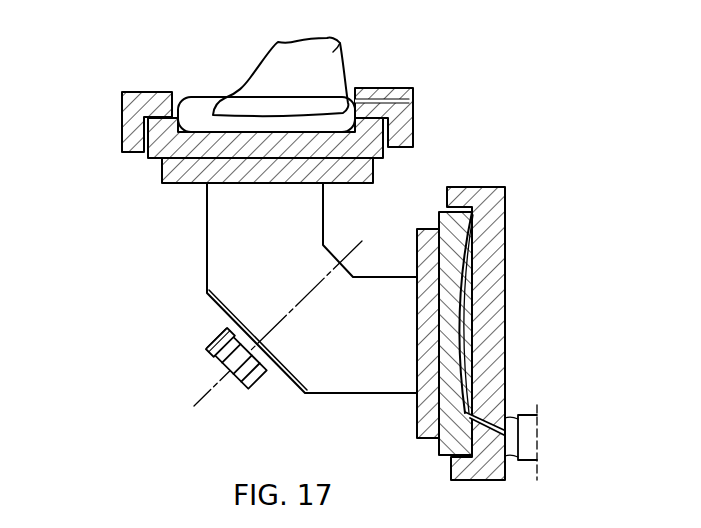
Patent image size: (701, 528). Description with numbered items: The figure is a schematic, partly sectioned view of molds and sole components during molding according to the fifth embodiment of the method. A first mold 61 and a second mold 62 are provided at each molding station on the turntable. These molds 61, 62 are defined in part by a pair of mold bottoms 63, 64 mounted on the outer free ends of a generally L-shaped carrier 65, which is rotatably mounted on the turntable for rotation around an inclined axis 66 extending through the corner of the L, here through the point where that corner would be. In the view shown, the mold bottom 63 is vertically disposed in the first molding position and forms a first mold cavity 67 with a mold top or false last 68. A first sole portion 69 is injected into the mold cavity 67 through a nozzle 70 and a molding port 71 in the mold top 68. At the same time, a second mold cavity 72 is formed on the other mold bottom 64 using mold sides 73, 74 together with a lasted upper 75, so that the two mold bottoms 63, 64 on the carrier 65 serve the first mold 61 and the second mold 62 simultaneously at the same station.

The first mold 61 is at (491, 302).
The second mold 62 is at (258, 119).
The mold bottom 63 is at (445, 448).
The mold bottom 64 is at (172, 148).
The L-shaped carrier 65 is at (230, 277).
The inclined axis 66 is at (207, 391).
The first mold cavity 67 is at (460, 333).
The mold top or false last 68 is at (493, 388).
The first sole portion 69 is at (467, 295).
The nozzle 70 is at (533, 458).
The molding port 71 is at (473, 412).
The second mold cavity 72 is at (200, 119).
The mold side 73 is at (123, 93).
The mold side 74 is at (407, 137).
The lasted upper 75 is at (343, 44).